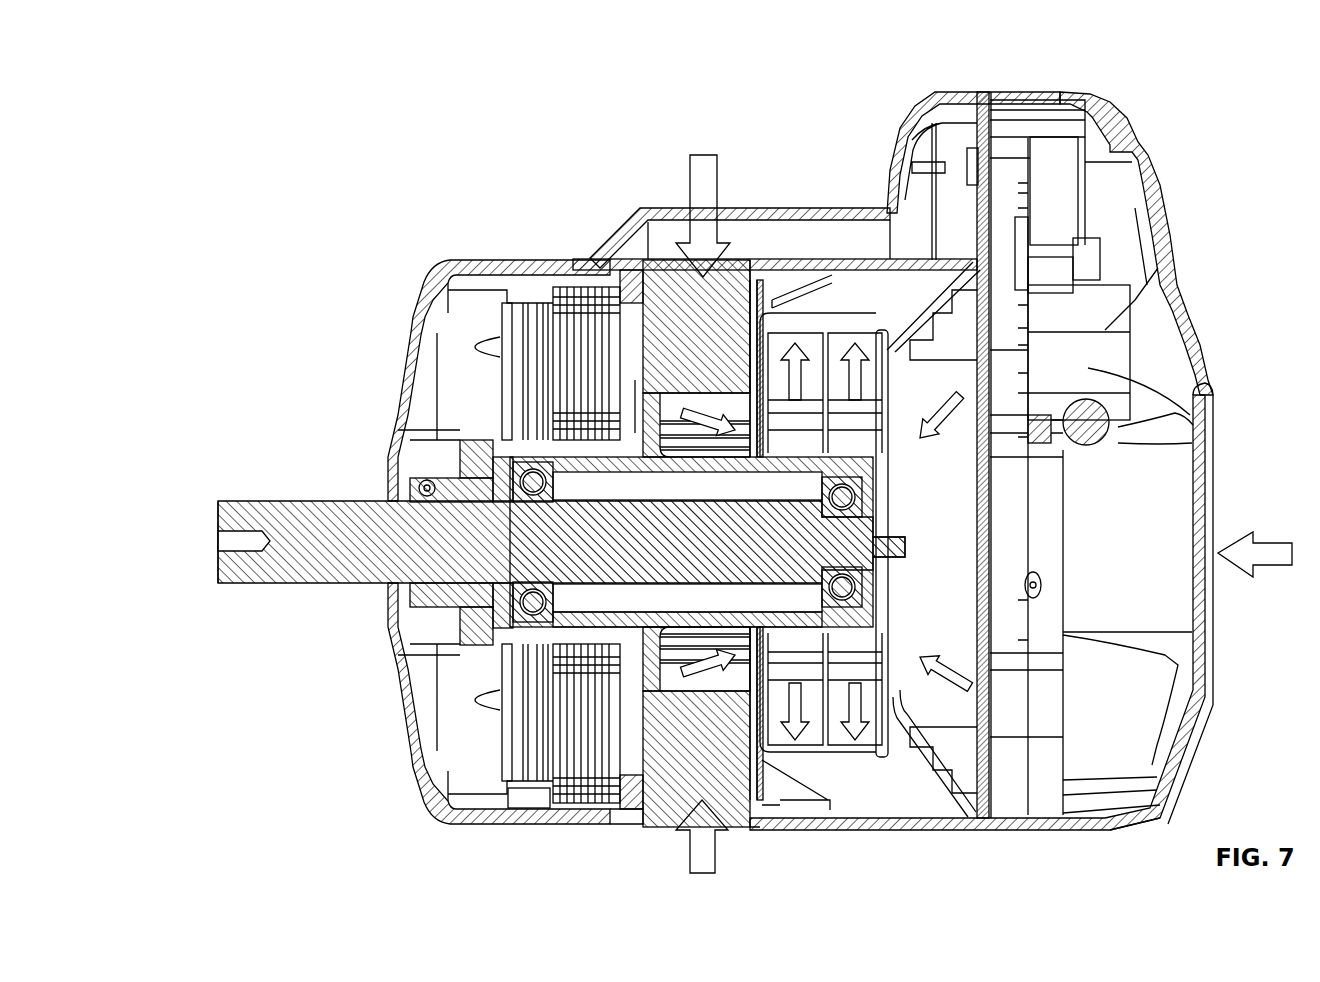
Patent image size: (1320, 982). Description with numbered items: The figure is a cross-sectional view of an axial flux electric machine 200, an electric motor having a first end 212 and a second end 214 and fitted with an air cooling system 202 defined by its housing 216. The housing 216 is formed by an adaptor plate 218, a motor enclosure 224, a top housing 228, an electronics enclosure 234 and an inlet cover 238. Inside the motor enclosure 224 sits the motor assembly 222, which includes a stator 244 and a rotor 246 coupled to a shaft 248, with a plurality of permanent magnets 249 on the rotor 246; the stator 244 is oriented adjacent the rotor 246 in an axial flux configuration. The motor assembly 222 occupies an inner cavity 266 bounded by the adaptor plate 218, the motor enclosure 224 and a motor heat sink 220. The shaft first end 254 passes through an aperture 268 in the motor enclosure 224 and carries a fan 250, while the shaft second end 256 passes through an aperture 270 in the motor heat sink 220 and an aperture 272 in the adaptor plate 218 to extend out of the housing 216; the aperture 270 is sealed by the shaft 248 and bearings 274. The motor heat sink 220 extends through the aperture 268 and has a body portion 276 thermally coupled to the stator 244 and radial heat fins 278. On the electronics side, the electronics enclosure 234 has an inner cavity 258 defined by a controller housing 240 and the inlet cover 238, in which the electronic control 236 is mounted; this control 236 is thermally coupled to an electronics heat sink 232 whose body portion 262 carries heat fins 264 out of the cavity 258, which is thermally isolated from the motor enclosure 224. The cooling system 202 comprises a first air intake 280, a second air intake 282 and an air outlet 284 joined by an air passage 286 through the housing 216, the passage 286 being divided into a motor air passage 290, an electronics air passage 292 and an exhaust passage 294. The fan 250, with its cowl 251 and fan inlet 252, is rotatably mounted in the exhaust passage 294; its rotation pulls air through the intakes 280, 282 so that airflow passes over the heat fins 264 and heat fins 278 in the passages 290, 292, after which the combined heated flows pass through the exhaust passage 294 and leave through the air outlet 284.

The axial flux electric machine 200 is at (365, 128).
The air cooling system 202 is at (737, 832).
The first end 212 is at (1237, 290).
The second end 214 is at (300, 244).
The housing 216 is at (648, 210).
The adaptor plate 218 is at (410, 760).
The motor heat sink 220 is at (637, 432).
The motor assembly 222 is at (530, 802).
The motor enclosure 224 is at (452, 343).
The top housing 228 is at (925, 100).
The electronics heat sink 232 is at (987, 517).
The electronics enclosure 234 is at (1113, 190).
The electronic control 236 is at (1123, 403).
The inlet cover 238 is at (1172, 268).
The controller housing 240 is at (1057, 90).
The stator 244 is at (567, 290).
The rotor 246 is at (505, 323).
The shaft 248 is at (362, 583).
The permanent magnets 249 is at (535, 312).
The fan 250 is at (882, 593).
The cowl 251 is at (765, 300).
The fan inlet 252 is at (955, 278).
The shaft first end 254 is at (900, 532).
The shaft second end 256 is at (236, 500).
The inner cavity 258 is at (1120, 250).
The body portion 262 is at (960, 497).
The heat fins 264 is at (950, 357).
The inner cavity 266 is at (468, 712).
The aperture 268 is at (750, 683).
The aperture 270 is at (687, 613).
The aperture 272 is at (395, 498).
The bearings 274 is at (553, 495).
The body portion 276 is at (643, 638).
The radial heat fins 278 is at (702, 400).
The first air intake 280 is at (727, 232).
The second air intake 282 is at (1203, 500).
The air outlet 284 is at (838, 308).
The air passage 286 is at (712, 215).
The motor air passage 290 is at (672, 290).
The electronics air passage 292 is at (1152, 568).
The exhaust passage 294 is at (785, 313).